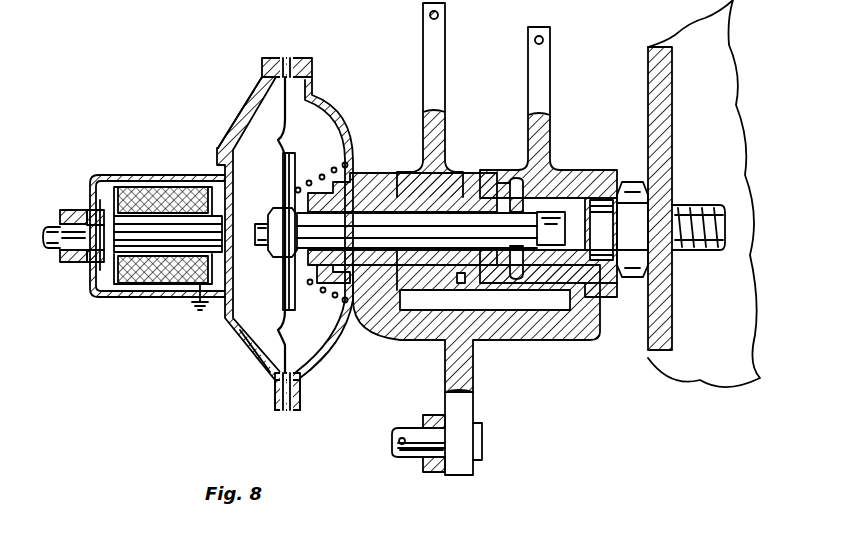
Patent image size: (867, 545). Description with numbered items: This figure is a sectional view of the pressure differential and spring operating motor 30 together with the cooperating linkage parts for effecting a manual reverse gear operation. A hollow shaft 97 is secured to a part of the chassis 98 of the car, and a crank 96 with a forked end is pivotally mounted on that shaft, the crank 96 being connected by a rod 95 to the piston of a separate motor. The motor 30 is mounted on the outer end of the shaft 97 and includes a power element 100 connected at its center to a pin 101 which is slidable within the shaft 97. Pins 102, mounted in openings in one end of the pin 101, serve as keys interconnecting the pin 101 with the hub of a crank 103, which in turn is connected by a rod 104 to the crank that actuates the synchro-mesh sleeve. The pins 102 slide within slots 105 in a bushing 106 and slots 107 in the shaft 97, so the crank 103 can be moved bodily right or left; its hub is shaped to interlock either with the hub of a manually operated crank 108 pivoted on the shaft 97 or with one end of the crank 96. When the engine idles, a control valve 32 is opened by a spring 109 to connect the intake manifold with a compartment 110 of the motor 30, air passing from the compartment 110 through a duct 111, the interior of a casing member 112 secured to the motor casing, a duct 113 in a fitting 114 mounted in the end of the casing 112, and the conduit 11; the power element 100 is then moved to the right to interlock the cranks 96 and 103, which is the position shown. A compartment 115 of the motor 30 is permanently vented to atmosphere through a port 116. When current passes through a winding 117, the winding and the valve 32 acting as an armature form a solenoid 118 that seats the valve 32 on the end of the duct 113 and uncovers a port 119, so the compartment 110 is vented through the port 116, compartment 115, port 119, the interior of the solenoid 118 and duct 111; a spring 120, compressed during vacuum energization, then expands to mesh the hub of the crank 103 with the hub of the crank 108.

The conduit 11 is at (54, 250).
The pressure differential and spring operating motor 30 is at (240, 338).
The control valve 32 is at (162, 224).
The rod 95 is at (435, 472).
The crank 96 is at (460, 408).
The hollow shaft 97 is at (372, 196).
The chassis 98 is at (656, 352).
The power element 100 is at (284, 286).
The pin 101 is at (393, 240).
The pins 102 is at (515, 182).
The crank 103 is at (545, 71).
The rod 104 is at (546, 41).
The slots 105 is at (548, 190).
The bushing 106 is at (580, 300).
The slots 107 is at (503, 256).
The crank 108 is at (436, 86).
The spring 109 is at (100, 292).
The compartment 110 is at (313, 110).
The duct 111 is at (237, 108).
The casing member 112 is at (148, 297).
The duct 113 is at (90, 263).
The fitting 114 is at (72, 216).
The compartment 115 is at (262, 141).
The port 116 is at (262, 352).
The winding 117 is at (127, 187).
The solenoid 118 is at (176, 300).
The port 119 is at (245, 242).
The spring 120 is at (321, 176).